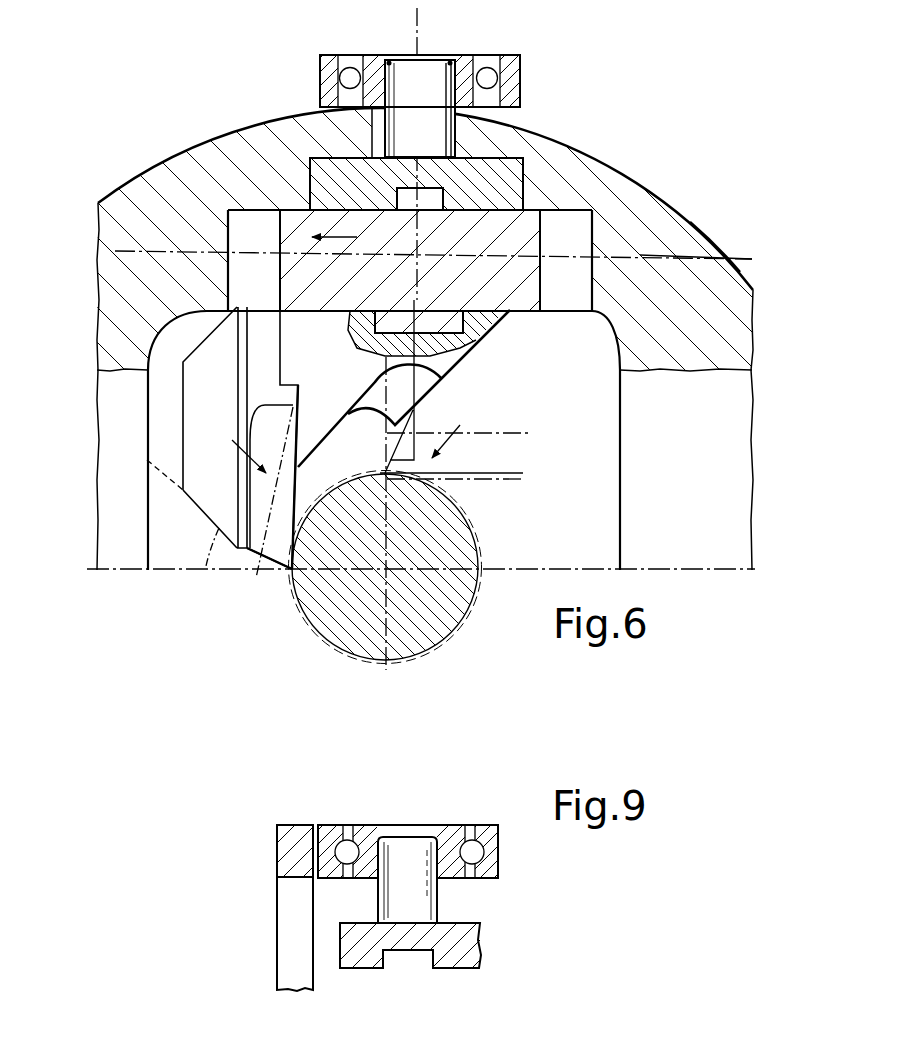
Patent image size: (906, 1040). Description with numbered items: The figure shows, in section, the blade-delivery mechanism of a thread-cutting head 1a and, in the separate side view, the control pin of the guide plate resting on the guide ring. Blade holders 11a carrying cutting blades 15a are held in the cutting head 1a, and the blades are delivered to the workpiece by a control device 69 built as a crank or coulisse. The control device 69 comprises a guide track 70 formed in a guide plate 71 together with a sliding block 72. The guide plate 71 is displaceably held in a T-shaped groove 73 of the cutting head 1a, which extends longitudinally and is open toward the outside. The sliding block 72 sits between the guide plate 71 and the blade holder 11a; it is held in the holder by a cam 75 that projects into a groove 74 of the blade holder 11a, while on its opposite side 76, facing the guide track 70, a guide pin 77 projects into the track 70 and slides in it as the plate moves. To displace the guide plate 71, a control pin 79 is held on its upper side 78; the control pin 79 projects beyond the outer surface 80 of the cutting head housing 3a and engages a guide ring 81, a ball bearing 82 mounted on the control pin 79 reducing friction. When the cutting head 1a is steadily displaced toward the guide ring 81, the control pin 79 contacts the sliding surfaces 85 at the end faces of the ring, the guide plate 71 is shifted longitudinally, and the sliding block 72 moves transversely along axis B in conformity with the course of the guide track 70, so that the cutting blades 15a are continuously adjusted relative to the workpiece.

In FIG. 6, the cutting head 1a is at (635, 193).
In FIG. 6, the cutting head housing 3a is at (722, 240).
In FIG. 6, the axis B is at (750, 258).
In FIG. 6, the blade holder 11a is at (200, 422).
In FIG. 6, the cutting blade 15a is at (248, 602).
In FIG. 6, the control device 69 is at (545, 201).
In FIG. 6, the guide track 70 is at (522, 150).
In FIG. 9, the guide track 70 is at (395, 953).
In FIG. 6, the guide plate 71 is at (327, 165).
In FIG. 9, the guide plate 71 is at (467, 950).
In FIG. 6, the sliding block 72 is at (262, 203).
In FIG. 6, the T-shaped groove 73 is at (388, 110).
In FIG. 6, the groove 74 is at (488, 332).
In FIG. 6, the cam 75 is at (433, 325).
In FIG. 6, the side 76 is at (292, 200).
In FIG. 6, the guide pin 77 is at (420, 200).
In FIG. 6, the upper side 78 is at (447, 182).
In FIG. 9, the upper side 78 is at (460, 923).
In FIG. 6, the control pin 79 is at (442, 82).
In FIG. 9, the control pin 79 is at (412, 847).
In FIG. 6, the outer surface 80 is at (677, 213).
In FIG. 9, the guide ring 81 is at (275, 920).
In FIG. 6, the ball bearing 82 is at (338, 60).
In FIG. 9, the ball bearing 82 is at (485, 838).
In FIG. 9, the sliding surfaces 85 is at (317, 842).